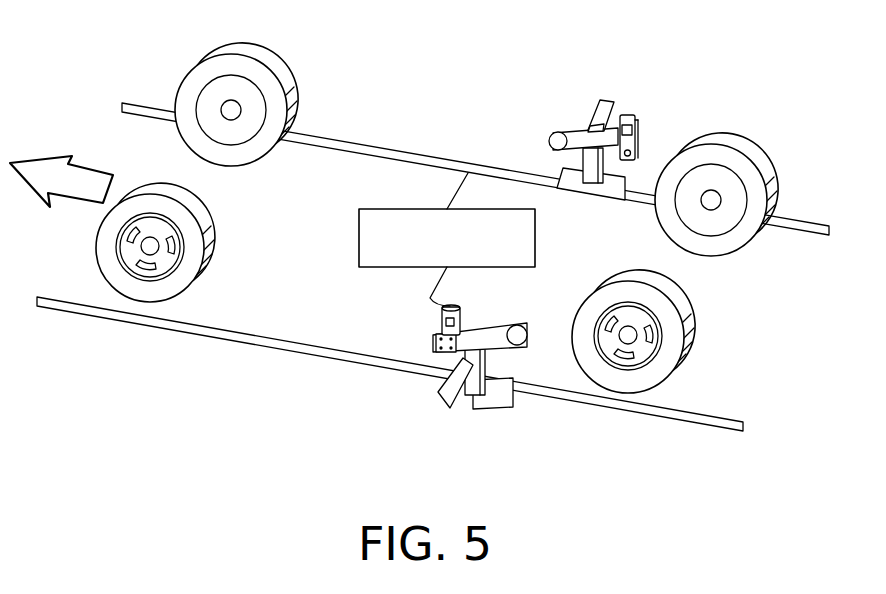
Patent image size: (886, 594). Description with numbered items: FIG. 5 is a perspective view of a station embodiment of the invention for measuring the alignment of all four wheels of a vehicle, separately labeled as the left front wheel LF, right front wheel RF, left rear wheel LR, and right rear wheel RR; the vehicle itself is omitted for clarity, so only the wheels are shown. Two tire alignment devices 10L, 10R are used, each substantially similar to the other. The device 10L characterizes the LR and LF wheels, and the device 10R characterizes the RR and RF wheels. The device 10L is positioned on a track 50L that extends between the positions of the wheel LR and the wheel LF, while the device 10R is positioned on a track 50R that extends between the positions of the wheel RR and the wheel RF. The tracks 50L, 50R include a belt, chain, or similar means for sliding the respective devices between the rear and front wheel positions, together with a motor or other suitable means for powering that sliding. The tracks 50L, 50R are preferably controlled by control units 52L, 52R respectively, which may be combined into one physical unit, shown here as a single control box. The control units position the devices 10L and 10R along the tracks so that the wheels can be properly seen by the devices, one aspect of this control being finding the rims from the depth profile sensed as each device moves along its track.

The right front wheel RF is at (268, 64).
The right rear wheel RR is at (727, 136).
The left front wheel LF is at (185, 193).
The left rear wheel LR is at (662, 282).
The tire alignment device 10R is at (579, 115).
The tire alignment device 10L is at (470, 395).
The track 50R is at (355, 148).
The track 50L is at (228, 335).
The control unit 52R is at (447, 239).
The control unit 52L is at (474, 274).